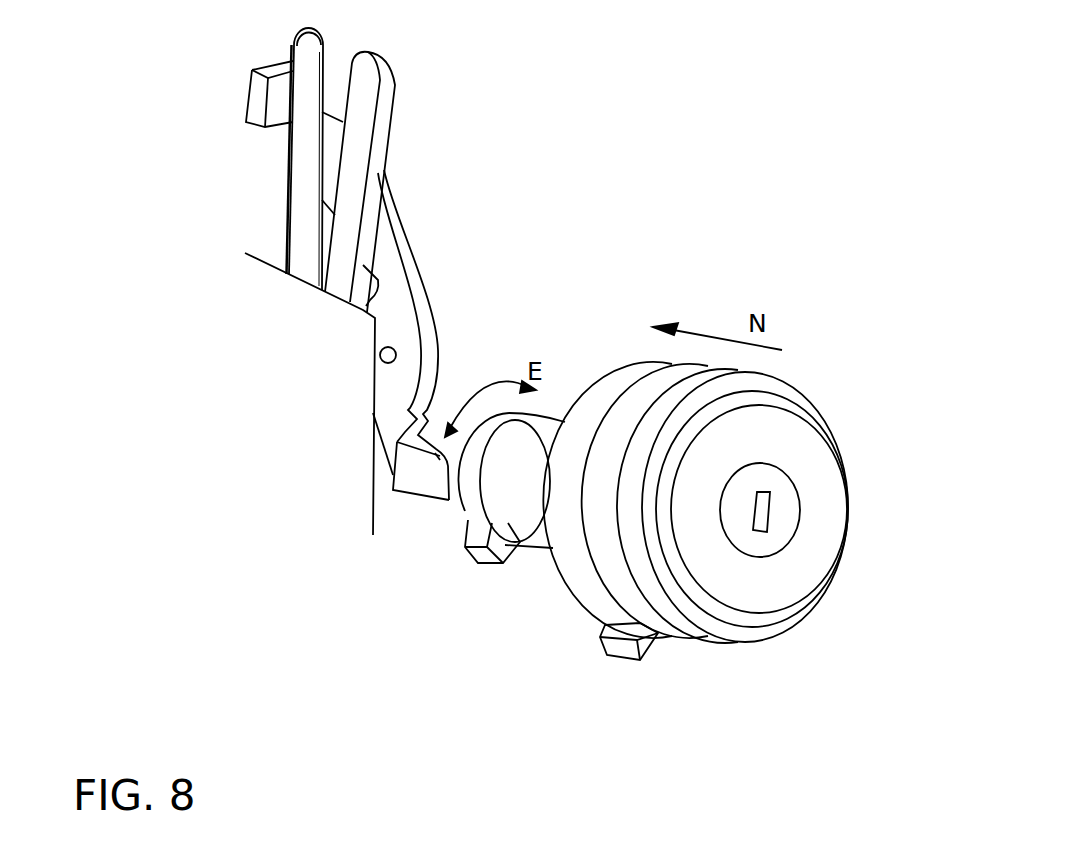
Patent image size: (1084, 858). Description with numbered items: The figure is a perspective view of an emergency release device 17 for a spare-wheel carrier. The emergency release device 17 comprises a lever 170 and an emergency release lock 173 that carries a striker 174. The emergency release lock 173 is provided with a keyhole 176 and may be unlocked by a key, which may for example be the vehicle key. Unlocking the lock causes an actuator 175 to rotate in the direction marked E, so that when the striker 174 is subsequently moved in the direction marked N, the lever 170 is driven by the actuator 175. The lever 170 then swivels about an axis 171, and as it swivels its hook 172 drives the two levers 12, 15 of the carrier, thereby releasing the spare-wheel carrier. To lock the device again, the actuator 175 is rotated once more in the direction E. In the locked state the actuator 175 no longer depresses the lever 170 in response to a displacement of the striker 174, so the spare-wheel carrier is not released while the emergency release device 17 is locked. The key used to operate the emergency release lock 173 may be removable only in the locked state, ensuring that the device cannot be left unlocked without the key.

The lever 12 is at (312, 163).
The lever 15 is at (390, 100).
The emergency release device 17 is at (698, 253).
The lever 170 is at (402, 252).
The axis 171 is at (388, 355).
The hook 172 is at (272, 122).
The emergency release lock 173 is at (750, 392).
The striker 174 is at (512, 497).
The actuator 175 is at (492, 560).
The keyhole 176 is at (762, 518).